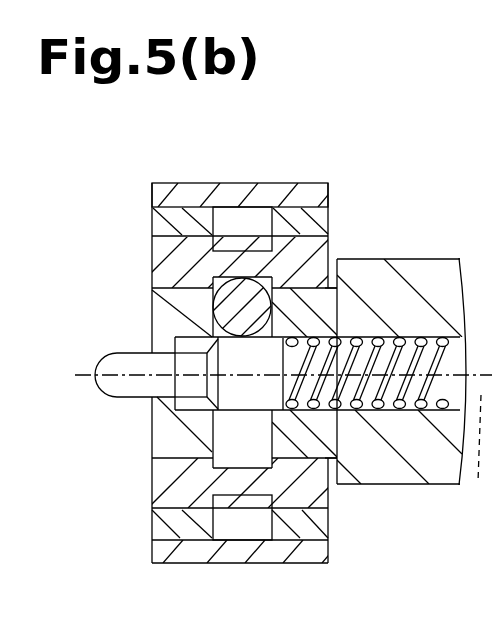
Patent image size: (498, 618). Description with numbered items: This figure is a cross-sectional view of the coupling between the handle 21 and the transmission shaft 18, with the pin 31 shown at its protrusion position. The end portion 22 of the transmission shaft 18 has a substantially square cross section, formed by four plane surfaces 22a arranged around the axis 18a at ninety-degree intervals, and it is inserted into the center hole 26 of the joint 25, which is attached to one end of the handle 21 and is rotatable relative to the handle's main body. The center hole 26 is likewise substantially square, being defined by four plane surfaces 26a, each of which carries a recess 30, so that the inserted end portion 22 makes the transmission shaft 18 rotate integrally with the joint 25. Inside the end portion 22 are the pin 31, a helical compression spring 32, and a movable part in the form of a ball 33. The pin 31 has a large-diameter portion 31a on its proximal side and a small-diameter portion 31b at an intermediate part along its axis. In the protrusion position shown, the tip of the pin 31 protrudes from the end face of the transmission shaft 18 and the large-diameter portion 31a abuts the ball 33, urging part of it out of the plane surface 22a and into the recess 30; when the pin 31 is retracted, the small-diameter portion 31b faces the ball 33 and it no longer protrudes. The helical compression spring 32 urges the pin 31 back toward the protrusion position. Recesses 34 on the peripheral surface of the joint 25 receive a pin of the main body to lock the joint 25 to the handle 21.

The transmission shaft 18 is at (428, 253).
The axis 18a is at (475, 460).
The handle 21 is at (306, 178).
The end portion 22 is at (162, 338).
The plane surface 22a is at (173, 482).
The joint 25 is at (164, 248).
The center hole 26 is at (163, 289).
The plane surface 26a is at (185, 456).
The recess 30 is at (266, 291).
The pin 31 is at (96, 384).
The large-diameter portion 31a is at (247, 403).
The small-diameter portion 31b is at (192, 382).
The helical compression spring 32 is at (412, 337).
The ball 33 is at (271, 312).
The recess 34 is at (247, 243).